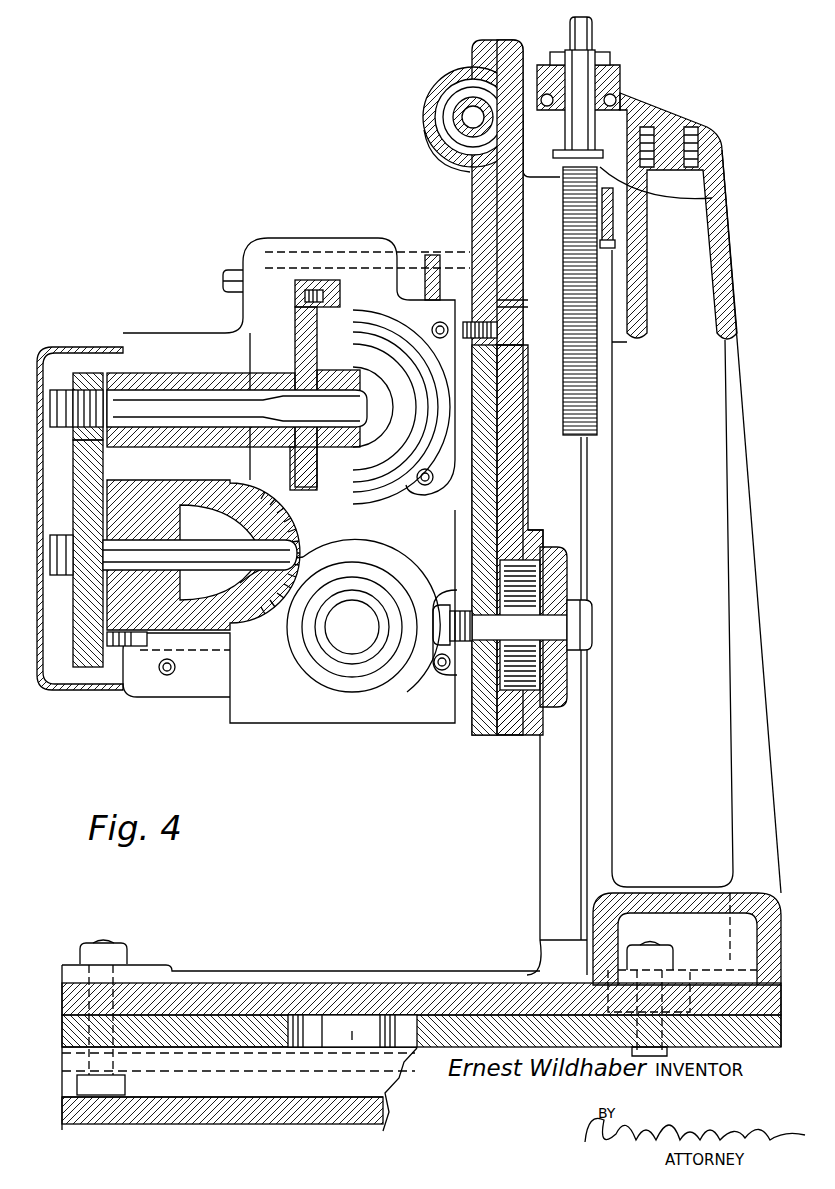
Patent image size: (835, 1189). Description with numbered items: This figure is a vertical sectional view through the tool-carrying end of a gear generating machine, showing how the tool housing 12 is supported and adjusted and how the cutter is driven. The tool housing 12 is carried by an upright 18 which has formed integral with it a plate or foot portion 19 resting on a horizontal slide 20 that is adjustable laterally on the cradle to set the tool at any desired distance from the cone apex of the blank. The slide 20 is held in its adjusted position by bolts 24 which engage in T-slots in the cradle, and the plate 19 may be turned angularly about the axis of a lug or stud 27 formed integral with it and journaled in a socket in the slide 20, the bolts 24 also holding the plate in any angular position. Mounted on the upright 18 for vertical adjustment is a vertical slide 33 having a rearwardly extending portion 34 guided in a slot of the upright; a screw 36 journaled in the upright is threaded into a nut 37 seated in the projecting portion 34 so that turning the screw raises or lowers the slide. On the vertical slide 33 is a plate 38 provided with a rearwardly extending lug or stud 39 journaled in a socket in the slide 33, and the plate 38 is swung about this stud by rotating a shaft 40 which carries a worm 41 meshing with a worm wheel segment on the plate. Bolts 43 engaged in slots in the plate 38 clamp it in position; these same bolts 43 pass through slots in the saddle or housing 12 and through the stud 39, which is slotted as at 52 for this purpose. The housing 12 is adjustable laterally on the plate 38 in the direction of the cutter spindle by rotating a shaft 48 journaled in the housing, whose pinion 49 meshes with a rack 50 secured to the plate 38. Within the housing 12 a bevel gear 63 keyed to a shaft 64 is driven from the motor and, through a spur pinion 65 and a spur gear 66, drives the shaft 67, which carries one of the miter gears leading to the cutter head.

The tool housing 12 is at (183, 680).
The upright 18 is at (714, 527).
The plate or foot portion 19 is at (453, 995).
The horizontal slide 20 is at (241, 1022).
The bolts 24 is at (656, 973).
The lug or stud 27 is at (369, 1027).
The vertical slide 33 is at (520, 56).
The rearwardly extending portion 34 is at (613, 211).
The screw 36 is at (590, 403).
The nut 37 is at (613, 243).
The plate 38 is at (490, 461).
The lug or stud 39 is at (543, 562).
The shaft 40 is at (492, 88).
The worm 41 is at (441, 98).
The bolts 43 is at (556, 631).
The shaft 48 is at (234, 275).
The pinion 49 is at (499, 294).
The rack 50 is at (501, 323).
The slot 52 is at (568, 601).
The bevel gear 63 is at (321, 292).
The shaft 64 is at (170, 405).
The spur pinion 65 is at (90, 393).
The spur gear 66 is at (81, 668).
The shaft 67 is at (149, 552).